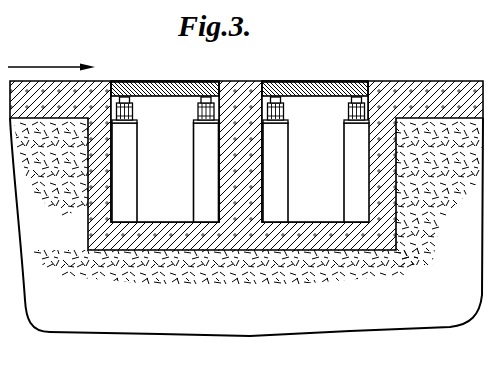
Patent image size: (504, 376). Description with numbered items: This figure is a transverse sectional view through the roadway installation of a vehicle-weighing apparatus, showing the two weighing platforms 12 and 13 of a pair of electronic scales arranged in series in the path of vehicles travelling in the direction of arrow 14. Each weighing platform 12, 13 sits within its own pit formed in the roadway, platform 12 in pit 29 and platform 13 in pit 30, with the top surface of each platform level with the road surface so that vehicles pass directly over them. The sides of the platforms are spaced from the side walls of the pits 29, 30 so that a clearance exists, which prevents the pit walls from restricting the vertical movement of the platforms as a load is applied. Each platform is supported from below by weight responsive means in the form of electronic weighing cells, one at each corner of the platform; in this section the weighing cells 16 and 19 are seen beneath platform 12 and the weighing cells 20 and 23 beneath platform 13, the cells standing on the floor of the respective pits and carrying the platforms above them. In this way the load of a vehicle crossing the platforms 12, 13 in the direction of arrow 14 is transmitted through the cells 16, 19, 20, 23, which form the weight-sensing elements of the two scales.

The weighing platform 12 is at (158, 97).
The weighing platform 13 is at (308, 96).
The arrow 14 is at (38, 64).
The electronic weighing cell 16 is at (123, 98).
The electronic weighing cell 19 is at (210, 98).
The electronic weighing cell 20 is at (272, 98).
The electronic weighing cell 23 is at (355, 98).
The pit 29 is at (163, 207).
The pit 30 is at (320, 205).